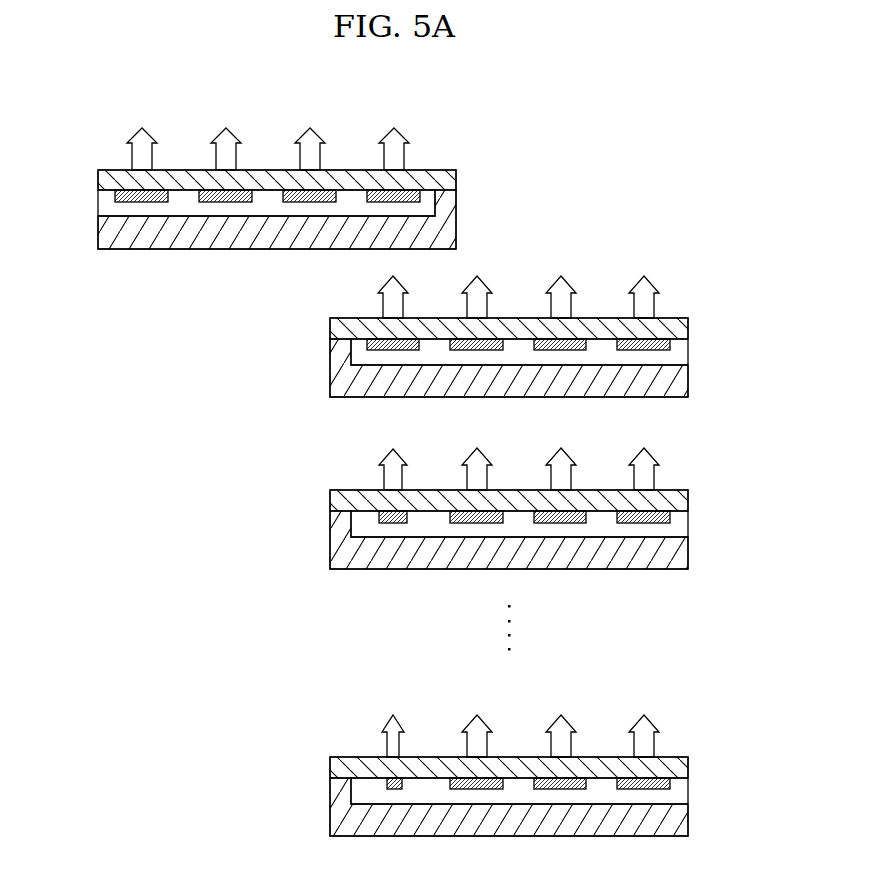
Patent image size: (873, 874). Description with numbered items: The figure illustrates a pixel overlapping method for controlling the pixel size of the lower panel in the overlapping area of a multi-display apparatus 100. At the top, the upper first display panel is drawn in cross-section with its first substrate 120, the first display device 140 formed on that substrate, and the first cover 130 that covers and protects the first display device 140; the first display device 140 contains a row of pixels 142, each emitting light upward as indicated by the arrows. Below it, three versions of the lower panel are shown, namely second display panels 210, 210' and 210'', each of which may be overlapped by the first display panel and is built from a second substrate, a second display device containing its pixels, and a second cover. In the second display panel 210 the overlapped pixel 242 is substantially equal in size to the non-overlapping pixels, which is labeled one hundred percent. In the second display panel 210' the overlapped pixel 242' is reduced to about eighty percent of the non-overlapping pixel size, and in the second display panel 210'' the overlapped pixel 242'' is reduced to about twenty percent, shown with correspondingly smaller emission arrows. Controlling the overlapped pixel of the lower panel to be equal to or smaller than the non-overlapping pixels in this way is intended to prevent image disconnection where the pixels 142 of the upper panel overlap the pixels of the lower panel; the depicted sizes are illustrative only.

The multi-display apparatus 100 is at (118, 168).
The first substrate 120 is at (98, 183).
The first cover 130 is at (98, 235).
The first display device 140 is at (98, 207).
The pixel of the first display panel 142 is at (420, 197).
The second display panel 210 is at (516, 325).
The second display panel 210' is at (515, 497).
The second display panel 210'' is at (515, 764).
The pixel of the second display panel 242 is at (347, 345).
The pixel of the second display panel 242' is at (339, 518).
The pixel of the second display panel 242'' is at (337, 784).